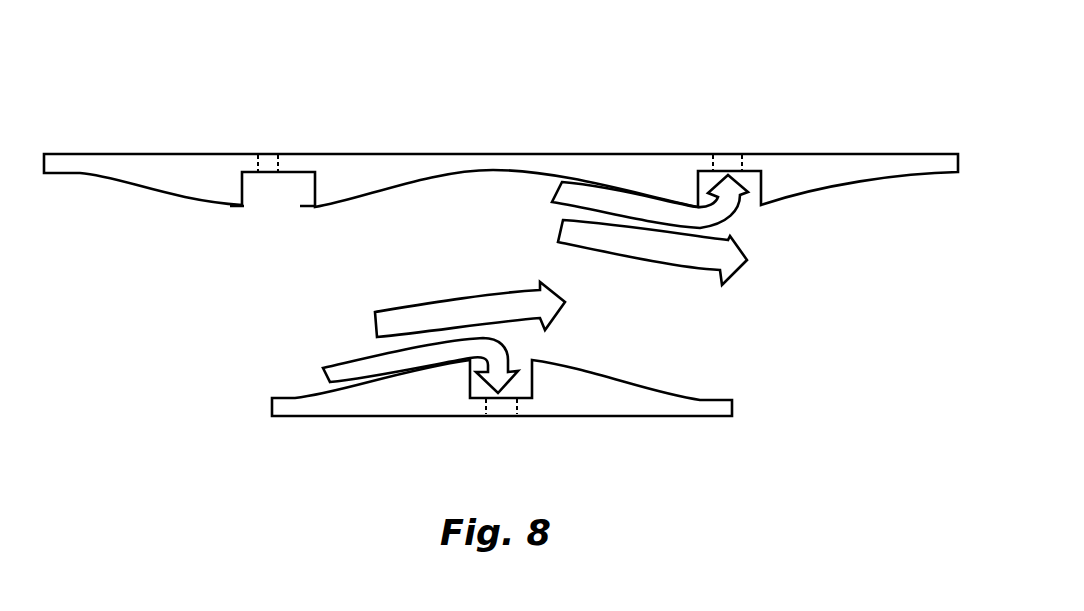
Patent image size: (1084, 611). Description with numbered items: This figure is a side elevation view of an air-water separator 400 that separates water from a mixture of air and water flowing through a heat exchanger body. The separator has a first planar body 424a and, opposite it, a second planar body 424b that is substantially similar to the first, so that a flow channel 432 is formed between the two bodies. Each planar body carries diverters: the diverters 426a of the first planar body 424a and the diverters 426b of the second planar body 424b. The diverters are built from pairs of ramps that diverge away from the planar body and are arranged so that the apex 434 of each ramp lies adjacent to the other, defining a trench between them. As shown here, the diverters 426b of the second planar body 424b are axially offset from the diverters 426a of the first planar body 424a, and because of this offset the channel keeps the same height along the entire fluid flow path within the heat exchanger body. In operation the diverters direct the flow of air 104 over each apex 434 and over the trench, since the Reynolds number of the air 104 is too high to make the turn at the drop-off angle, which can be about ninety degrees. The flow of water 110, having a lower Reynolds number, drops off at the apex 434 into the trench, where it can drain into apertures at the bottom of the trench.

The air-water separator 400 is at (160, 80).
The first planar body 424a is at (648, 398).
The second planar body 424b is at (368, 160).
The diverters of the first planar body 426a is at (438, 397).
The diverters of the second planar body 426b is at (218, 172).
The flow channel 432 is at (194, 329).
The apex 434 is at (228, 210).
The flow of air 104 is at (470, 298).
The flow of water 110 is at (633, 205).